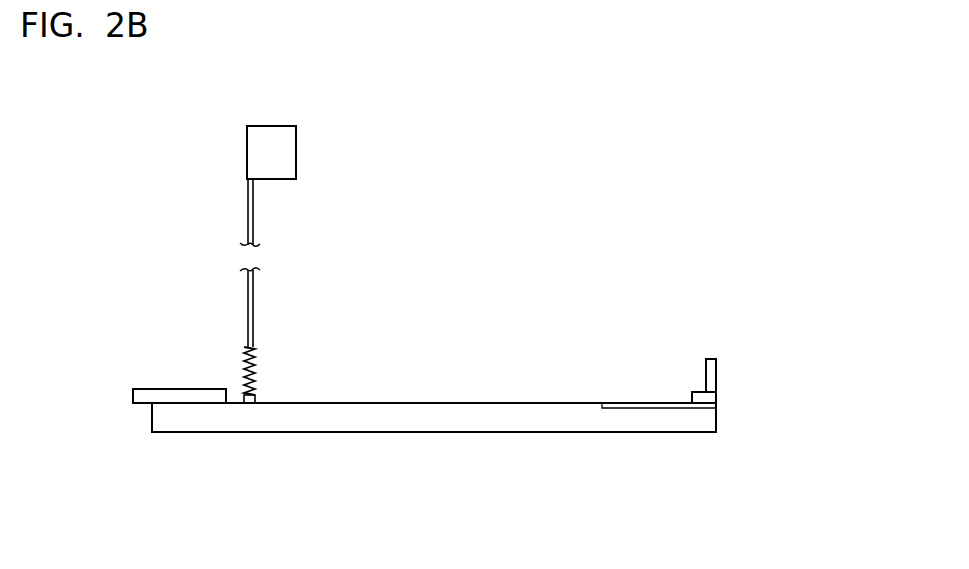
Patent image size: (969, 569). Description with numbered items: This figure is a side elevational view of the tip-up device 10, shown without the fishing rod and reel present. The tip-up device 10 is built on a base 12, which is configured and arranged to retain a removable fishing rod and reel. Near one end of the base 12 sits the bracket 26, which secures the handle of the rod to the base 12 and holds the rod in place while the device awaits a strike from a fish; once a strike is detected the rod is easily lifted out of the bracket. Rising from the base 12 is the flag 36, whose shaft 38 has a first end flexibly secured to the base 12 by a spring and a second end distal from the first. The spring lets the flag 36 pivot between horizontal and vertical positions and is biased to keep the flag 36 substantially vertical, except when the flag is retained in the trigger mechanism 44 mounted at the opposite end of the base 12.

The tip-up device 10 is at (627, 315).
The base 12 is at (560, 418).
The bracket 26 is at (168, 398).
The flag 36 is at (276, 228).
The shaft 38 is at (248, 318).
The trigger mechanism 44 is at (709, 373).